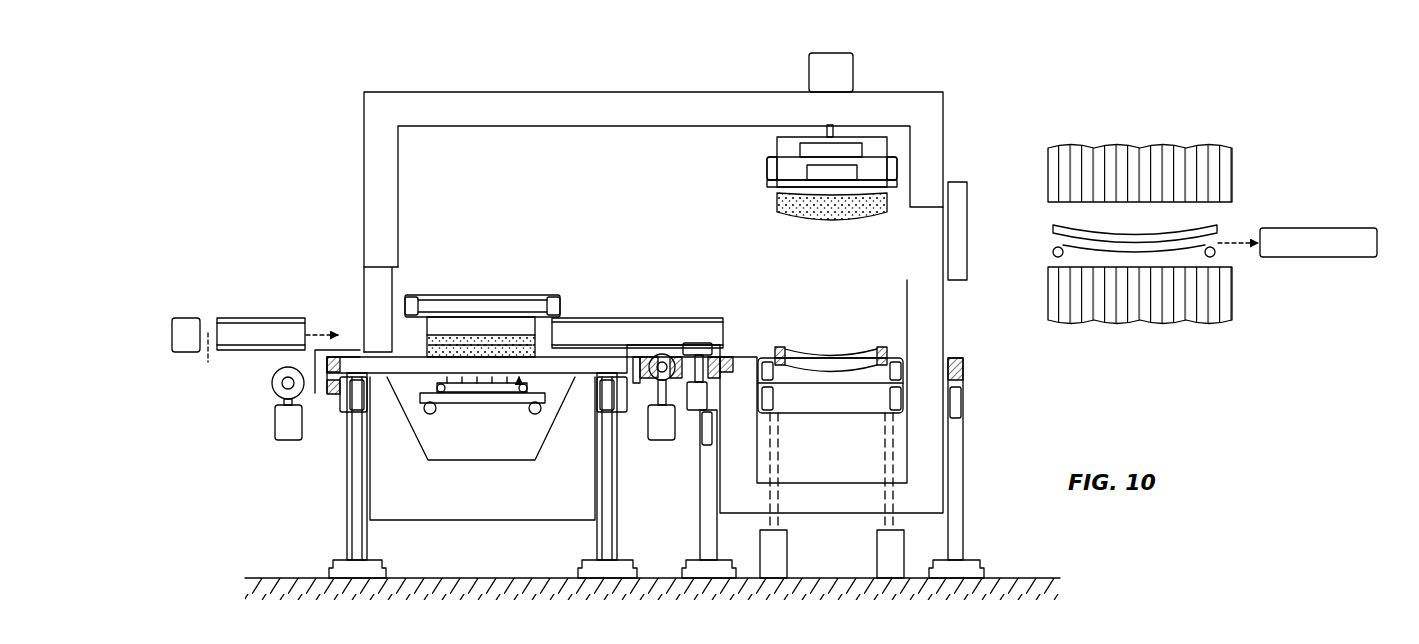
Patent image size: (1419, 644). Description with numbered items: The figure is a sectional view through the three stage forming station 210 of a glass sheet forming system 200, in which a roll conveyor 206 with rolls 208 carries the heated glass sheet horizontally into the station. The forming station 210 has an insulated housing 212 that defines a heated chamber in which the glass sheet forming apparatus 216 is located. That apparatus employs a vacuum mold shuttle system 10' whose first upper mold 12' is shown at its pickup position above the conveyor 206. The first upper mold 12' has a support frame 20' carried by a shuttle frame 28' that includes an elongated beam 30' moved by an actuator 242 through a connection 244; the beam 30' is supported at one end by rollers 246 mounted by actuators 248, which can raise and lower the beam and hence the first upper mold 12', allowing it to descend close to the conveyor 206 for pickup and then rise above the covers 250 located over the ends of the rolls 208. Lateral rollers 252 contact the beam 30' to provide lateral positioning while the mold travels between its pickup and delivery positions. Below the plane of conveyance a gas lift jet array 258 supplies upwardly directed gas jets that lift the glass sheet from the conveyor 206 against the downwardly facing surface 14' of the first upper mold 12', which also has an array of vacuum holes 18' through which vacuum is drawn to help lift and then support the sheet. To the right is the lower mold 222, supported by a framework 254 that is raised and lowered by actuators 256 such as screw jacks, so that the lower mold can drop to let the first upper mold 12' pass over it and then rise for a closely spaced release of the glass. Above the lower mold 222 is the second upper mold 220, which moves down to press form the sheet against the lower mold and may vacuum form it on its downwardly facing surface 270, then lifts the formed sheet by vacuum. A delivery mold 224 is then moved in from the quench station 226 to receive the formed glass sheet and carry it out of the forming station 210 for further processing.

The glass sheet forming system 200 is at (411, 62).
The three stage forming station 210 is at (540, 90).
The insulated housing 212 is at (665, 88).
The glass sheet forming apparatus 216 is at (683, 150).
The second upper mold 220 is at (760, 207).
The downwardly facing surface 270 is at (833, 224).
The vacuum mold shuttle system 10' is at (238, 334).
The elongated beam 30' is at (260, 305).
The actuator 242 is at (180, 318).
The connection 244 is at (208, 362).
The rolls 208 is at (352, 378).
The first upper mold 12' is at (461, 291).
The support frame 20' is at (507, 271).
The array of vacuum holes 18' is at (484, 296).
The downwardly facing surface 14' is at (491, 288).
The covers 250 is at (327, 350).
The conveyor 206 is at (560, 362).
The gas lift jet array 258 is at (425, 383).
The rollers 246 is at (650, 387).
The actuators 248 is at (663, 442).
The lateral rollers 252 is at (700, 344).
The shuttle frame 28' is at (637, 286).
The lower mold 222 is at (768, 352).
The actuators 256 is at (877, 565).
The framework 254 is at (908, 385).
The quench station 226 is at (1212, 115).
The delivery mold 224 is at (1222, 253).